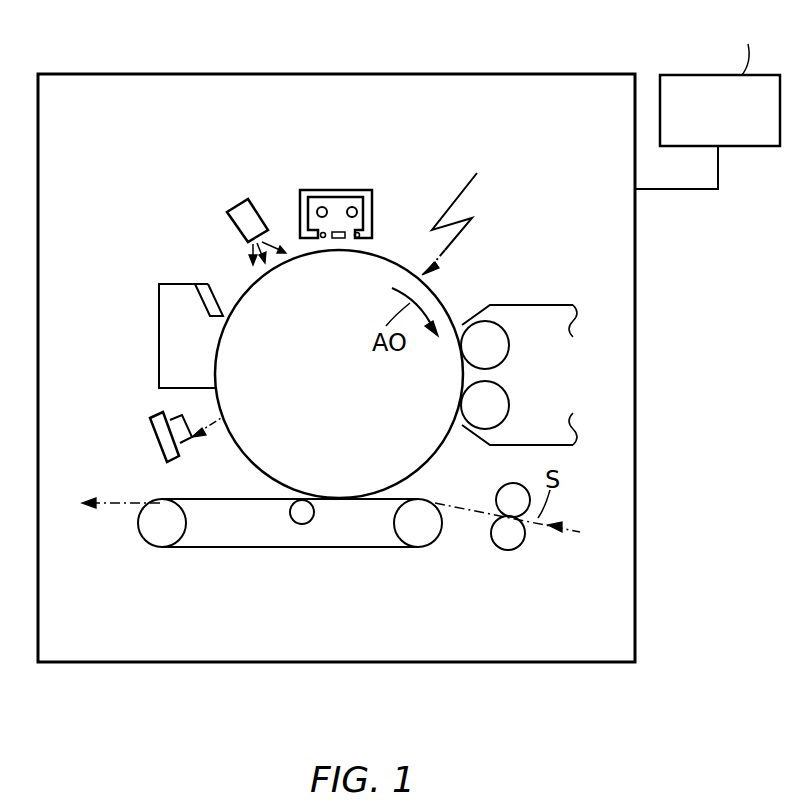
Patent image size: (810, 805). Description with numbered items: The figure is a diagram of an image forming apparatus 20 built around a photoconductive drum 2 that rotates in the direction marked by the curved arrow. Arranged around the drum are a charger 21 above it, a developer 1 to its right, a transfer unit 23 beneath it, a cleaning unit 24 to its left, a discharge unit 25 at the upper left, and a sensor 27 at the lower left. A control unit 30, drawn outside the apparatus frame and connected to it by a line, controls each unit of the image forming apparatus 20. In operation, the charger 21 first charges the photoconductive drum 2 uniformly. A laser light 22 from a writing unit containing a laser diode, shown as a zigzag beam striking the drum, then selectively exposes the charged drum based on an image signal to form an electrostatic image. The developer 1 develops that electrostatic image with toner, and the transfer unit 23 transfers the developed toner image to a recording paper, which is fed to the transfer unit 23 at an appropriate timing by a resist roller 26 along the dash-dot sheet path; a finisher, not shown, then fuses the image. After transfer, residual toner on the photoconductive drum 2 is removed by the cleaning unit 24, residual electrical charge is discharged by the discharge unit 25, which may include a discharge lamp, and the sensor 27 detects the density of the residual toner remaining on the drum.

The developer 1 is at (530, 305).
The photoconductive drum 2 is at (397, 266).
The image forming apparatus 20 is at (280, 204).
The charger 21 is at (340, 190).
The laser light 22 is at (455, 200).
The transfer unit 23 is at (346, 550).
The cleaning unit 24 is at (158, 328).
The discharge unit 25 is at (230, 208).
The resist roller 26 is at (517, 548).
The sensor 27 is at (160, 440).
The control unit 30 is at (756, 147).